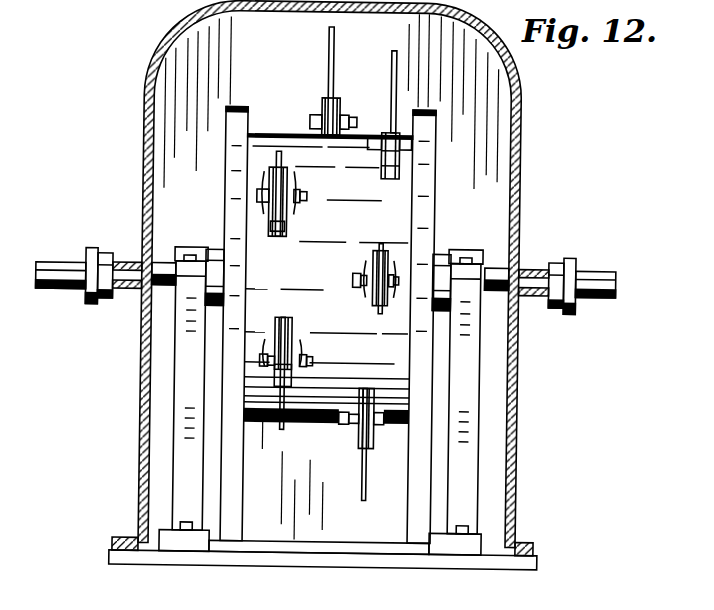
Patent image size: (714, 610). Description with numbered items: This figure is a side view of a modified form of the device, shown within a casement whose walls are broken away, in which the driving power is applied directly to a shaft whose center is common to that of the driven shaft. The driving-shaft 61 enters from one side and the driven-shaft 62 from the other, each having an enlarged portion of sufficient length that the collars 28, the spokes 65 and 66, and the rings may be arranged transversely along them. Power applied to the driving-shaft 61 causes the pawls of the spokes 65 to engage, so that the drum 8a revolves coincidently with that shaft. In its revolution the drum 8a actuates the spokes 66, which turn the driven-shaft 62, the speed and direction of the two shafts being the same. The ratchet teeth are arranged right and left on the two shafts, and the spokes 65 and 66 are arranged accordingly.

The drum 8a is at (266, 130).
The collar 28 is at (212, 246).
The driving-shaft 61 is at (599, 278).
The driven-shaft 62 is at (48, 264).
The spoke 65 is at (389, 71).
The spoke 66 is at (325, 31).